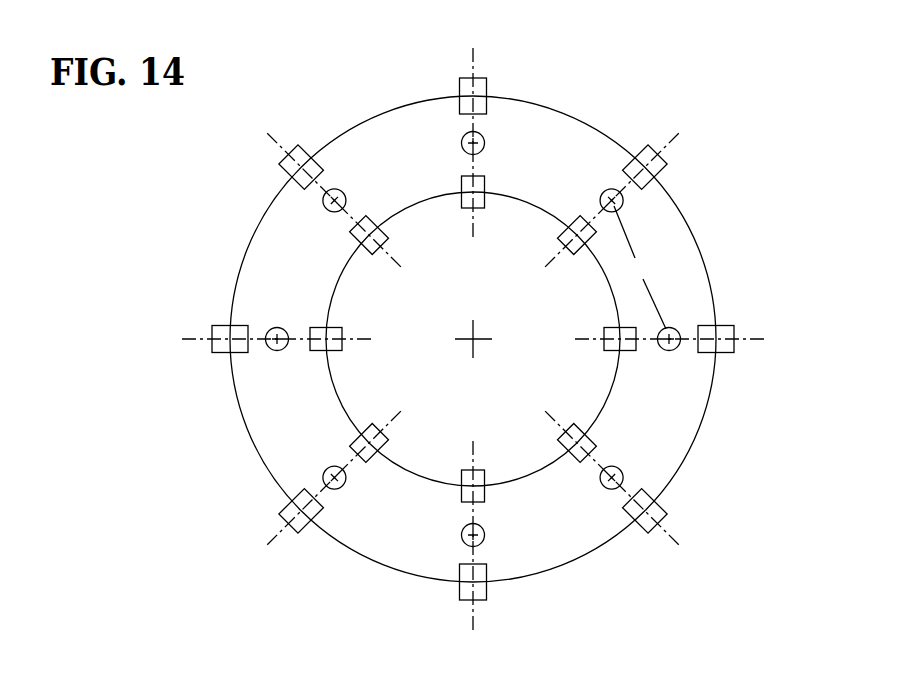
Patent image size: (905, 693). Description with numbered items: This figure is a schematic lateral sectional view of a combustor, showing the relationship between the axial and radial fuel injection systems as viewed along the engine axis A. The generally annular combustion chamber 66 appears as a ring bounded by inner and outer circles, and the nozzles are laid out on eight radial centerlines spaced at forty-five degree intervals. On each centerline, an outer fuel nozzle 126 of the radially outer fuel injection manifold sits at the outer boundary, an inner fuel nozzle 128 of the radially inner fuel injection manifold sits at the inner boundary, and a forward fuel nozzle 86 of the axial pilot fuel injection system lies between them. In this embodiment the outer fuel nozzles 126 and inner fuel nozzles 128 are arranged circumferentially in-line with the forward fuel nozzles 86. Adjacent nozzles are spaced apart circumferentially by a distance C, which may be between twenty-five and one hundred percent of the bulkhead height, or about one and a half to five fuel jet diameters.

The combustion chamber 66 is at (553, 521).
The outer fuel nozzles 126 is at (488, 90).
The forward fuel nozzles 86 is at (484, 141).
The inner fuel nozzles 128 is at (562, 238).
The central axis A is at (475, 341).
The distance C is at (640, 267).